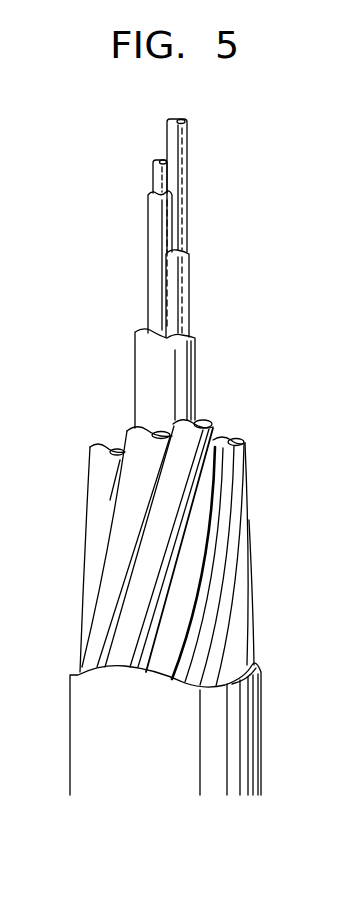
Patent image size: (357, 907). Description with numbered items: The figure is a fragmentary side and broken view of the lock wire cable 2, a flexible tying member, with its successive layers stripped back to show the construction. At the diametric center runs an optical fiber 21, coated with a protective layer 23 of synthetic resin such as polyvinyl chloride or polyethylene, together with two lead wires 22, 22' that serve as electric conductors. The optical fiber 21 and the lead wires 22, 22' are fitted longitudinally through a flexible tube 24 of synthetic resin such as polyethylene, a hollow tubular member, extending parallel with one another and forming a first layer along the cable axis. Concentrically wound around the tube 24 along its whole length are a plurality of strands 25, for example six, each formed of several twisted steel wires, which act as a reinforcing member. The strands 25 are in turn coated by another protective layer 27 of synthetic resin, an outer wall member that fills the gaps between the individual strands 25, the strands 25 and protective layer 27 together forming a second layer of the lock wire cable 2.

The lock wire cable 2 is at (256, 418).
The optical fiber 21 is at (157, 177).
The lead wire 22 is at (207, 185).
The lead wire 22' is at (203, 293).
The protective layer 23 is at (157, 230).
The flexible tube 24 is at (183, 374).
The strands 25 is at (217, 487).
The protective layer 27 is at (90, 742).